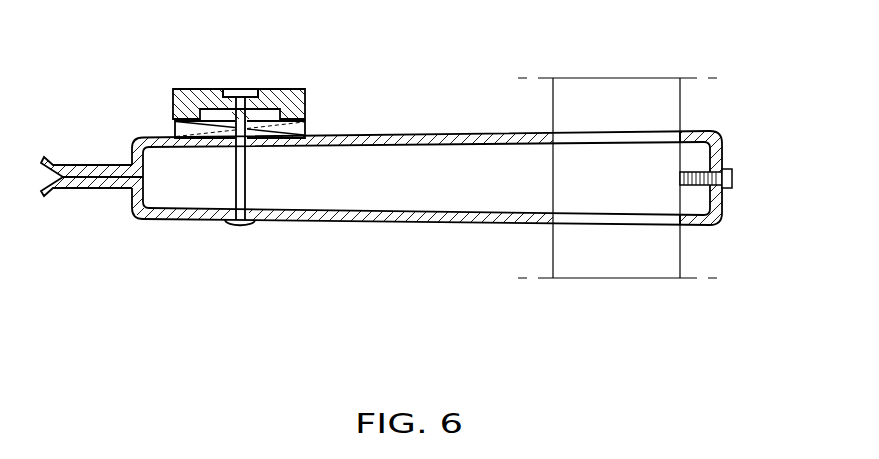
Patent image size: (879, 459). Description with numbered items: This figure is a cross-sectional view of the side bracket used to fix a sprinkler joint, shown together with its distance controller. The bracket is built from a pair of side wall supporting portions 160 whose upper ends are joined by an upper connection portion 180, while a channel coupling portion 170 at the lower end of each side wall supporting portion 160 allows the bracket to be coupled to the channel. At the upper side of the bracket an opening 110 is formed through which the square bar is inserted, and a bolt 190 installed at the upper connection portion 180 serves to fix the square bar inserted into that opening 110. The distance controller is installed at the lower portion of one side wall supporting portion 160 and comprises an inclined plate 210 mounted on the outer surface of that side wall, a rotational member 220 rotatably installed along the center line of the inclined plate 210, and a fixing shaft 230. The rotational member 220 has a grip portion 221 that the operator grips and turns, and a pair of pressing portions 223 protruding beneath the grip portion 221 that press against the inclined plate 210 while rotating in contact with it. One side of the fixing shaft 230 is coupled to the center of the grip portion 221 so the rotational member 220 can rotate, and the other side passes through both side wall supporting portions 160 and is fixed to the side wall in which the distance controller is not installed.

The opening 110 is at (612, 134).
The side wall supporting portion 160 is at (397, 222).
The channel coupling portion 170 is at (95, 188).
The upper connection portion 180 is at (718, 202).
The bolt 190 is at (734, 176).
The inclined plate 210 is at (254, 104).
The rotational member 220 is at (247, 61).
The grip portion 221 is at (207, 88).
The pressing portion 223 is at (180, 117).
The fixing shaft 230 is at (242, 224).